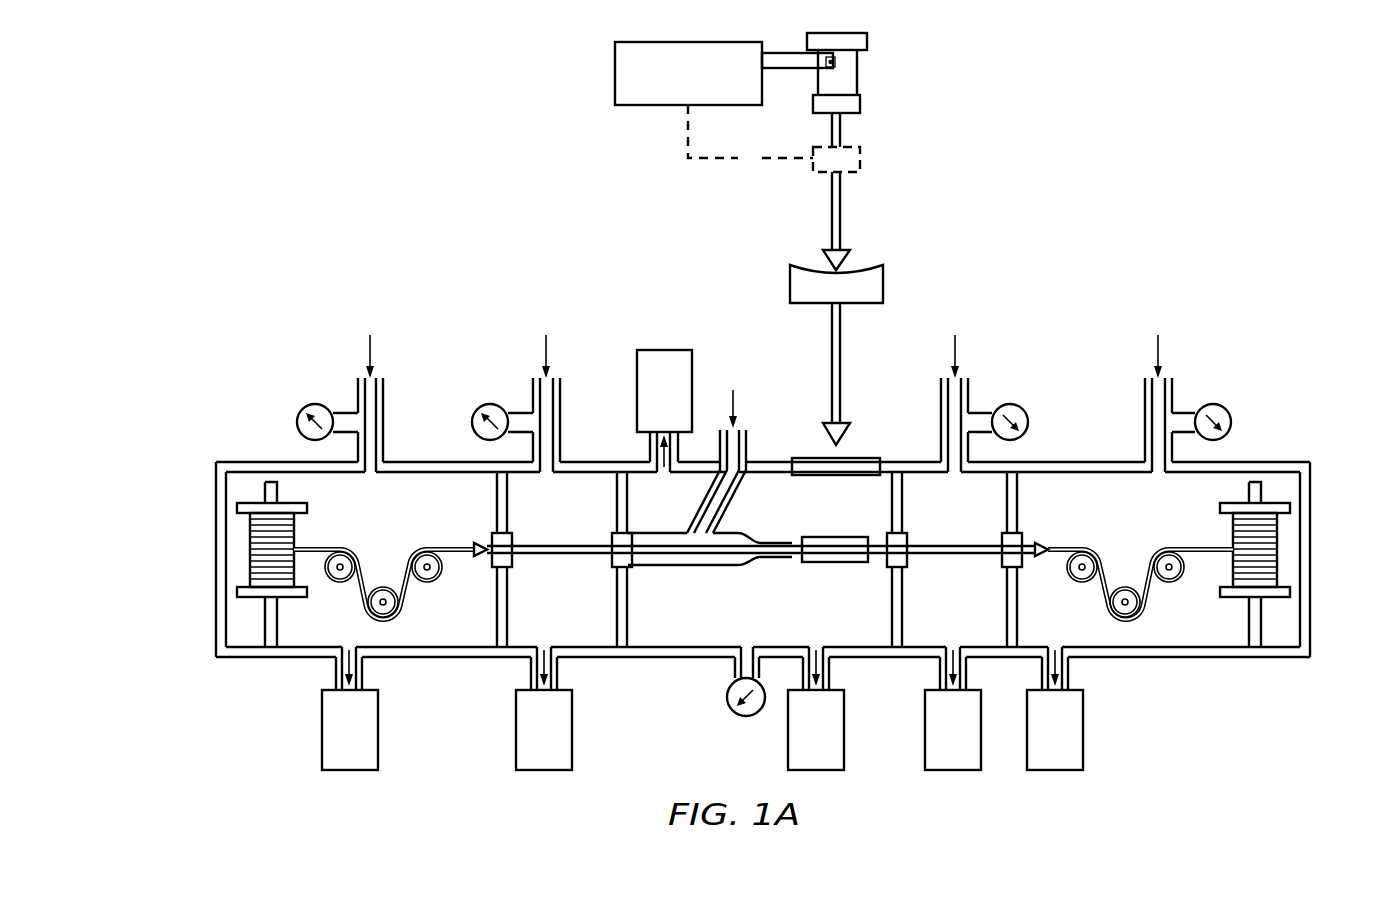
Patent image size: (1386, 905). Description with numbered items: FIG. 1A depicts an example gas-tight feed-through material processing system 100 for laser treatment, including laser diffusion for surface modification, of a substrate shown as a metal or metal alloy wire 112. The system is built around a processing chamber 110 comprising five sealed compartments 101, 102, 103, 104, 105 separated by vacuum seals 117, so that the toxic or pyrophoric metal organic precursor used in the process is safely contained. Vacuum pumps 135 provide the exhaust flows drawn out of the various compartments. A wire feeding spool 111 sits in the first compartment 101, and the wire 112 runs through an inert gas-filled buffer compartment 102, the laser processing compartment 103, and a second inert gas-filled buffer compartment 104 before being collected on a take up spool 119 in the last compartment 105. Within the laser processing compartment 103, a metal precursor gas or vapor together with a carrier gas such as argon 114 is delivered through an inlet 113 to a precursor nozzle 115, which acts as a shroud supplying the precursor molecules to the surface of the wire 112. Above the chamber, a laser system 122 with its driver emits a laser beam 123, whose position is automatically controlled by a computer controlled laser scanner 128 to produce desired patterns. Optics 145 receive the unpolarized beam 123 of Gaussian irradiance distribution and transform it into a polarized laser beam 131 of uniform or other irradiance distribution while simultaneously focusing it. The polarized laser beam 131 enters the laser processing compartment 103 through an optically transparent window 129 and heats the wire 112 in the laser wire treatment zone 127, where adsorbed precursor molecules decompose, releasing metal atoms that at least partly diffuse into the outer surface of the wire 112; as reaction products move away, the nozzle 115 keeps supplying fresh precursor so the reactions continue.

The material processing system 100 is at (483, 215).
The compartment 101 is at (451, 510).
The buffer compartment 102 is at (569, 510).
The laser processing compartment 103 is at (854, 510).
The buffer compartment 104 is at (972, 510).
The compartment 105 is at (1175, 510).
The processing chamber 110 is at (277, 456).
The wire feeding spool 111 is at (250, 543).
The wire 112 is at (470, 553).
The inlet 113 is at (745, 448).
The precursor gas and carrier gas 114 is at (737, 322).
The precursor nozzle 115 is at (710, 575).
The vacuum seal 117 is at (511, 567).
The take up spool 119 is at (1277, 538).
The laser system 122 is at (855, 70).
The laser beam 123 is at (832, 208).
The laser wire treatment zone 127 is at (835, 587).
The laser scanner 128 is at (705, 97).
The optically transparent window 129 is at (847, 460).
The polarized laser beam 131 is at (842, 393).
The vacuum pump 135 is at (648, 401).
The optics 145 is at (884, 272).